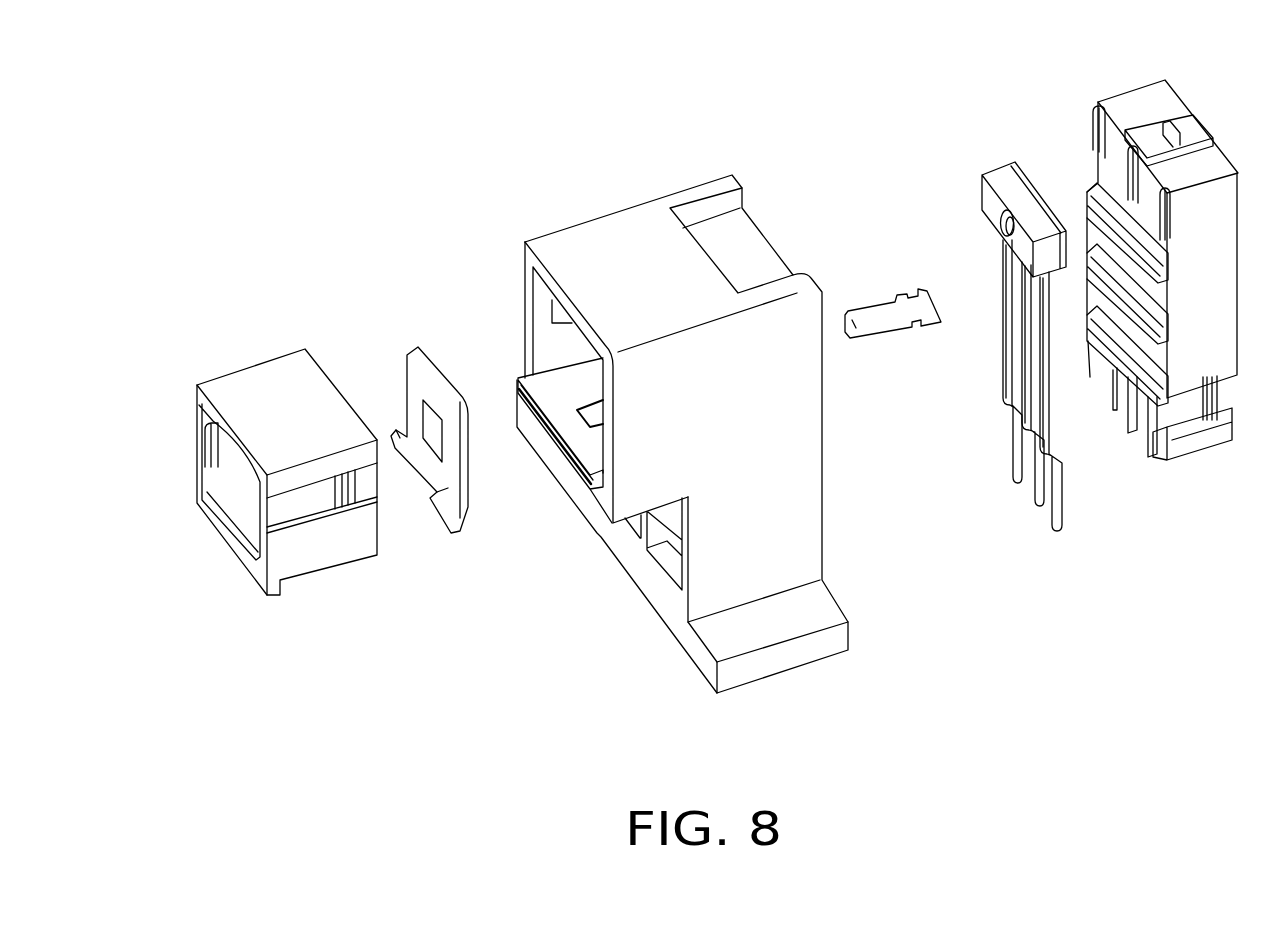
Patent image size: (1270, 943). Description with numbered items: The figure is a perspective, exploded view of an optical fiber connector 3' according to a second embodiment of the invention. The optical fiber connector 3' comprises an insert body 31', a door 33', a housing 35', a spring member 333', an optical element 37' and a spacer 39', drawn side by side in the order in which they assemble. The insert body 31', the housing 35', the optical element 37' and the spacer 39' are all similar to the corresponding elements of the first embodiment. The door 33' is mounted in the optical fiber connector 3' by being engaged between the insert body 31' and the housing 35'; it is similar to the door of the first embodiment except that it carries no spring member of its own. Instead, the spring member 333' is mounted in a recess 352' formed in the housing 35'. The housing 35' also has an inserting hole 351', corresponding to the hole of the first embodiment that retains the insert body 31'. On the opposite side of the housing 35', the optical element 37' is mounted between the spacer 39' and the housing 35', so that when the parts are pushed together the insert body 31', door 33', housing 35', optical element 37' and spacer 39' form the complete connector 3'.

The optical fiber connector 3' is at (699, 360).
The insert body 31' is at (258, 440).
The door 33' is at (429, 391).
The housing 35' is at (656, 411).
The inserting hole 351' is at (538, 395).
The recess 352' is at (553, 497).
The spring member 333' is at (902, 260).
The optical element 37' is at (1024, 310).
The spacer 39' is at (1172, 244).